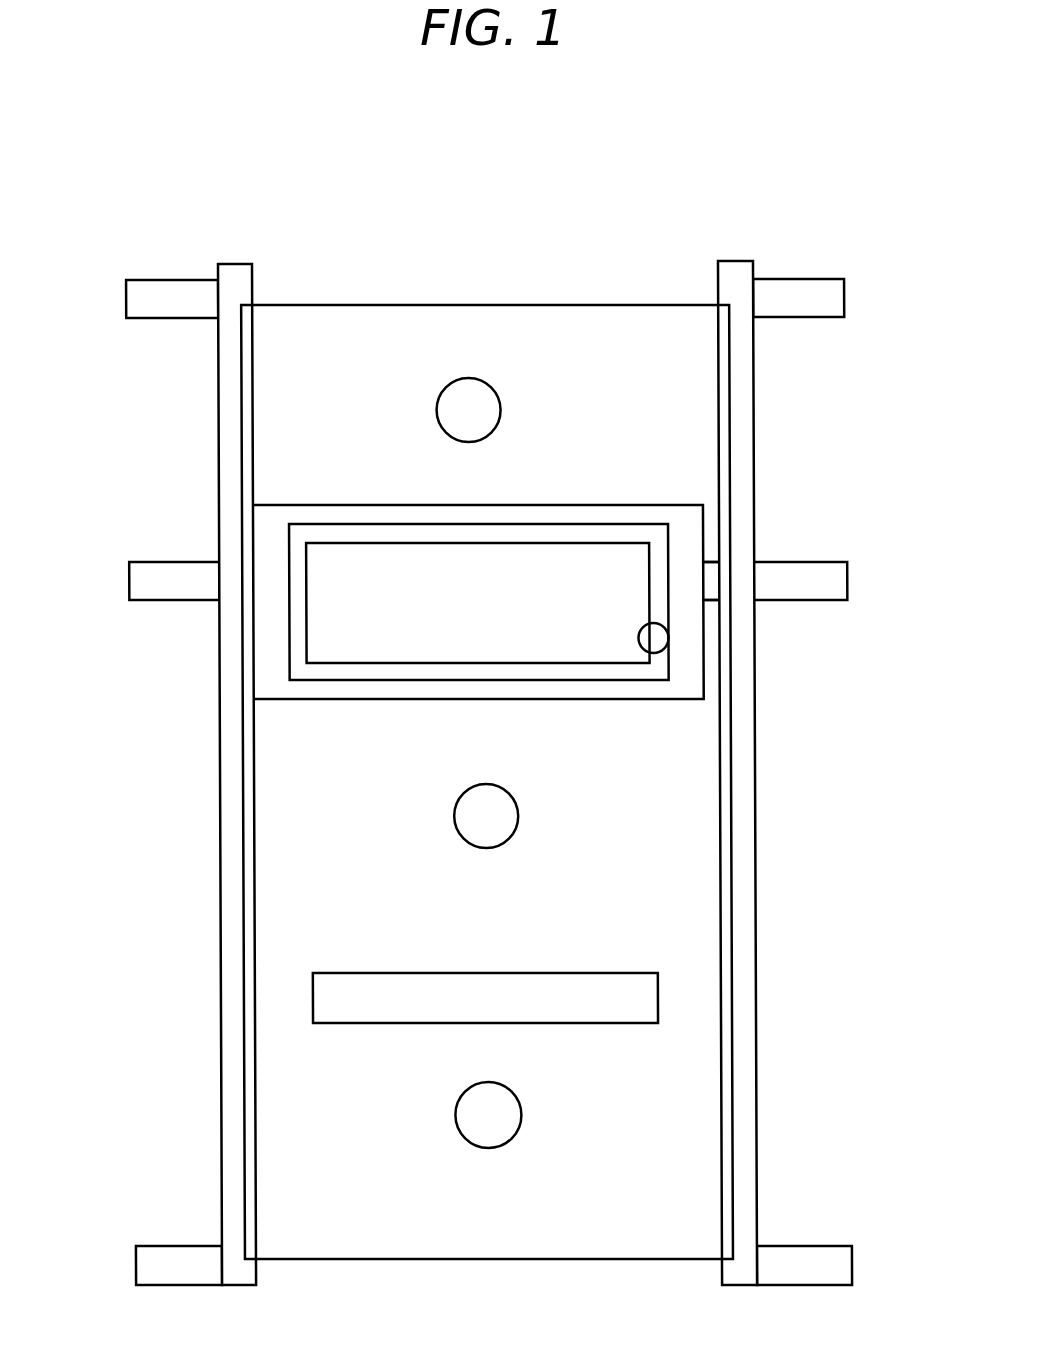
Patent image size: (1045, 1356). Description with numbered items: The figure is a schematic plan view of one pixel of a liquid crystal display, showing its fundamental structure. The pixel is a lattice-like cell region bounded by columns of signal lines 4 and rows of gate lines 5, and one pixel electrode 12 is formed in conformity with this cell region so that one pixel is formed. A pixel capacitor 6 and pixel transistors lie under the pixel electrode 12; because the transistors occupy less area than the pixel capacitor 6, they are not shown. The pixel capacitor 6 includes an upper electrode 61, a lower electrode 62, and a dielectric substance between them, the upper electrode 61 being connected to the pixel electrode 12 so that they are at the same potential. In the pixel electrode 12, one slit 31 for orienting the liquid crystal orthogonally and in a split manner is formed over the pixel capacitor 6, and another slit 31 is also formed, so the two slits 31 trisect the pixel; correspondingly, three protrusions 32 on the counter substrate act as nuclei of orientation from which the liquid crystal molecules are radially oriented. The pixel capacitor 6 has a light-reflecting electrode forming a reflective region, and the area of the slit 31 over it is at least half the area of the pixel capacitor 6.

The signal line 4 is at (218, 409).
The gate line 5 is at (172, 280).
The pixel capacitor 6 is at (780, 451).
The pixel electrode 12 is at (732, 847).
The slit 31 is at (627, 560).
The protrusion 32 is at (468, 378).
The upper electrode 61 is at (657, 655).
The lower electrode 62 is at (847, 580).